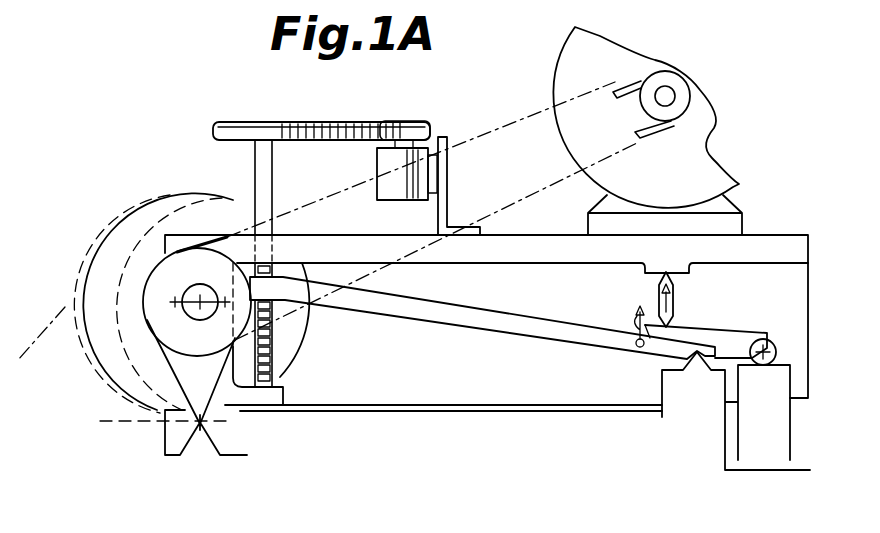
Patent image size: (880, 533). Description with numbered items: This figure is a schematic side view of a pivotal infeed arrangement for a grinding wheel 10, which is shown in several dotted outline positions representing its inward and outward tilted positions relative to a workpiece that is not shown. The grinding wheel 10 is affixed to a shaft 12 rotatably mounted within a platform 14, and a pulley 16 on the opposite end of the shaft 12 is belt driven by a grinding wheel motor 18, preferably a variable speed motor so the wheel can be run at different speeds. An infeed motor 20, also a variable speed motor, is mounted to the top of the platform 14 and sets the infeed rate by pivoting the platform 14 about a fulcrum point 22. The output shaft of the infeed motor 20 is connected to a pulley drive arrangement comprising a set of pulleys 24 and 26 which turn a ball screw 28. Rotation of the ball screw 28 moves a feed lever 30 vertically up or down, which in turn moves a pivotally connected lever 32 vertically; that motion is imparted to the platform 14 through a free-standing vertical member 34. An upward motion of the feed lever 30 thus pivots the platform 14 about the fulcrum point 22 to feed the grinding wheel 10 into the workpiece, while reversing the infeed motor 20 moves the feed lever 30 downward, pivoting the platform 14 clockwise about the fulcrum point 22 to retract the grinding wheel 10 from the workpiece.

The grinding wheel 10 is at (98, 325).
The shaft 12 is at (198, 312).
The platform 14 is at (772, 235).
The pulley 16 is at (203, 347).
The grinding wheel motor 18 is at (697, 153).
The infeed motor 20 is at (403, 202).
The fulcrum point 22 is at (212, 443).
The pulley 24 is at (403, 130).
The pulley 26 is at (268, 122).
The ball screw 28 is at (263, 185).
The feed lever 30 is at (460, 313).
The lever 32 is at (730, 340).
The free-standing vertical member 34 is at (678, 302).